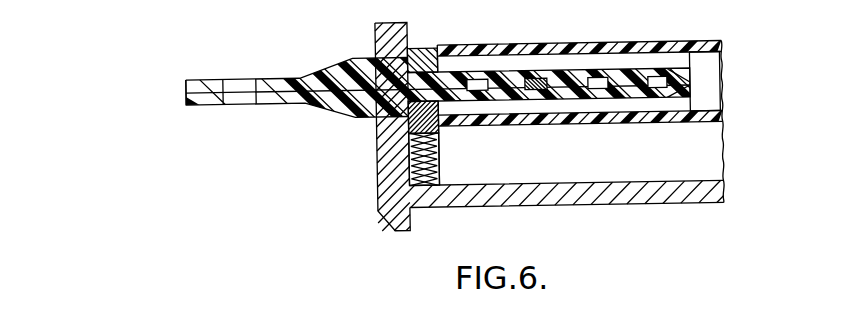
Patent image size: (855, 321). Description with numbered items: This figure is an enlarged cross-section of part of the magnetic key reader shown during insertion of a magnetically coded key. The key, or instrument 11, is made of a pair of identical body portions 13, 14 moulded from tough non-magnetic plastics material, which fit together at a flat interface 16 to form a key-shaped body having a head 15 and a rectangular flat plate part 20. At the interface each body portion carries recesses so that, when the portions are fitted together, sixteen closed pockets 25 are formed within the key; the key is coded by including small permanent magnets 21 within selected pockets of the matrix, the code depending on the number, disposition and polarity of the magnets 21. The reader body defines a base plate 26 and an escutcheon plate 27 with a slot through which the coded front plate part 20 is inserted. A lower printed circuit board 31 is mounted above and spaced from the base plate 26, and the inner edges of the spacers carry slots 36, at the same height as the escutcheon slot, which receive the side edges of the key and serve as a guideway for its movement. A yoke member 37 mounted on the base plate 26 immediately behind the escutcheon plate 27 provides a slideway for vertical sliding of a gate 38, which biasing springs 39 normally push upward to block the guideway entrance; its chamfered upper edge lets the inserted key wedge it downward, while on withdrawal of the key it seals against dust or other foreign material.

The instrument 11 is at (330, 119).
The body portion 13 is at (280, 84).
The body portion 14 is at (268, 100).
The head 15 is at (210, 82).
The flat interface 16 is at (184, 96).
The rectangular flat plate part 20 is at (562, 78).
The permanent magnet 21 is at (531, 79).
The closed pocket 25 is at (594, 79).
The base plate 26 is at (556, 198).
The escutcheon plate 27 is at (389, 38).
The lower printed circuit board 31 is at (664, 118).
The slot 36 is at (691, 68).
The yoke member 37 is at (421, 49).
The gate 38 is at (438, 128).
The biasing spring 39 is at (438, 152).